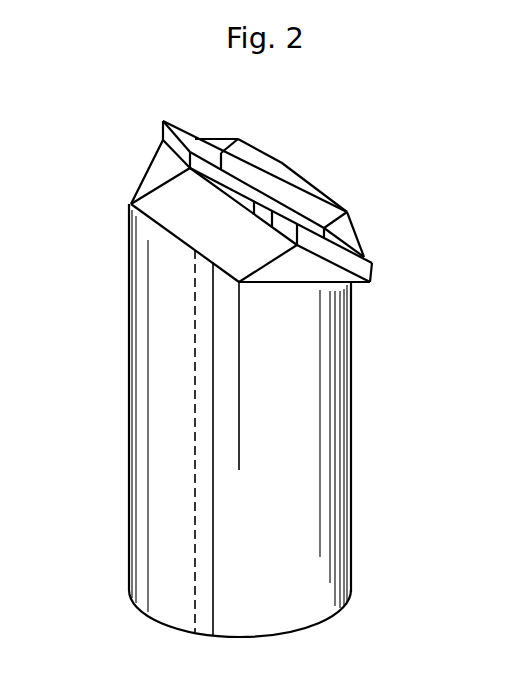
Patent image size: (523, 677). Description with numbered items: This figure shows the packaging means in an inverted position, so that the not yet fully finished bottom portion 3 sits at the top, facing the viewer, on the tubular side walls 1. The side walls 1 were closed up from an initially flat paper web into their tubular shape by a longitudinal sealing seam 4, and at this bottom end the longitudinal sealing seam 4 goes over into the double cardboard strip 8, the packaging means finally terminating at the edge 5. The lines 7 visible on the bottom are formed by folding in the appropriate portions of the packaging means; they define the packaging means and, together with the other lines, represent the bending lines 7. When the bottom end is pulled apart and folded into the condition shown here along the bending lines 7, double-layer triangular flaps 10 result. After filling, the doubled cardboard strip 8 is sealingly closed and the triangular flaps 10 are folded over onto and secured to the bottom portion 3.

The side walls 1 is at (292, 495).
The bottom portion 3 is at (287, 167).
The longitudinal sealing seam 4 is at (217, 250).
The edge 5 is at (253, 173).
The bending lines 7 is at (313, 190).
The double cardboard strip 8 is at (133, 219).
The triangular flaps 10 is at (157, 164).